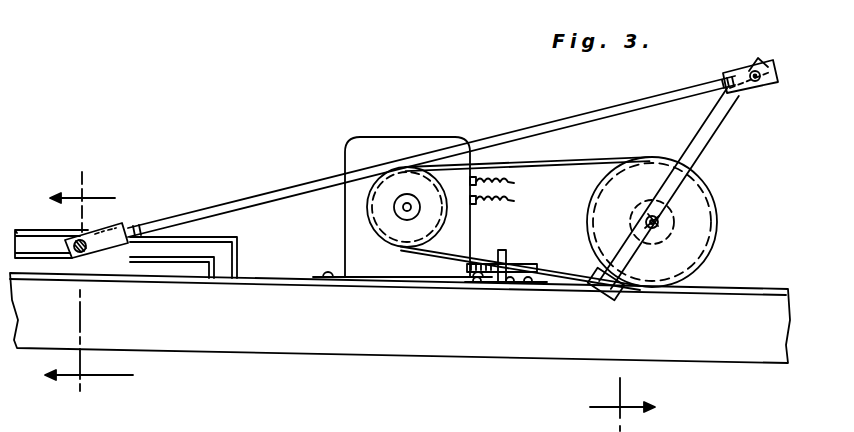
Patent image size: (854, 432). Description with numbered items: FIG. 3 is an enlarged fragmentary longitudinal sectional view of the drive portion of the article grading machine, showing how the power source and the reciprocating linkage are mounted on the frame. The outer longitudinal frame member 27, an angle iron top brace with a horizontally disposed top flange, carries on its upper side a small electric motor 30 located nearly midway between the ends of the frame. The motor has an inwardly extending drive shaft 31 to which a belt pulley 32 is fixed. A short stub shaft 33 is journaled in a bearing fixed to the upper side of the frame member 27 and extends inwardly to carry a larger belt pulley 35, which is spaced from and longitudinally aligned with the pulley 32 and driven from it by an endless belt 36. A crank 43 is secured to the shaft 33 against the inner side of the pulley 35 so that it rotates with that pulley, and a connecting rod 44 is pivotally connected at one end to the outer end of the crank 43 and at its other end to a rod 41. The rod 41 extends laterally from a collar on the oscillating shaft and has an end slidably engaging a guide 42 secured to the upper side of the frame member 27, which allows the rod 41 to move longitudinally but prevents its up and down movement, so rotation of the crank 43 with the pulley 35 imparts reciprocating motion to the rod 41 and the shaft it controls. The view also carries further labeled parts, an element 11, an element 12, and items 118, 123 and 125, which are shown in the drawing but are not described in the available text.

The section line 11- 11 is at (89, 281).
The section line 12- 12 is at (609, 404).
The base plate 27 is at (480, 338).
The motor 30 is at (396, 137).
The motor drive pulley 31 is at (400, 214).
The drive belt run 32 is at (411, 241).
The shaft 33 is at (660, 219).
The driven pulley wheel 35 is at (656, 168).
The belt 36 is at (562, 168).
The slide block 41 is at (88, 241).
The guide track 42 is at (188, 243).
The link arm 43 is at (701, 151).
The connecting rod 44 is at (541, 124).
The adjacent figure element 118 is at (693, 430).
The adjacent figure element 123 is at (300, 423).
The adjacent figure element 125 is at (530, 421).